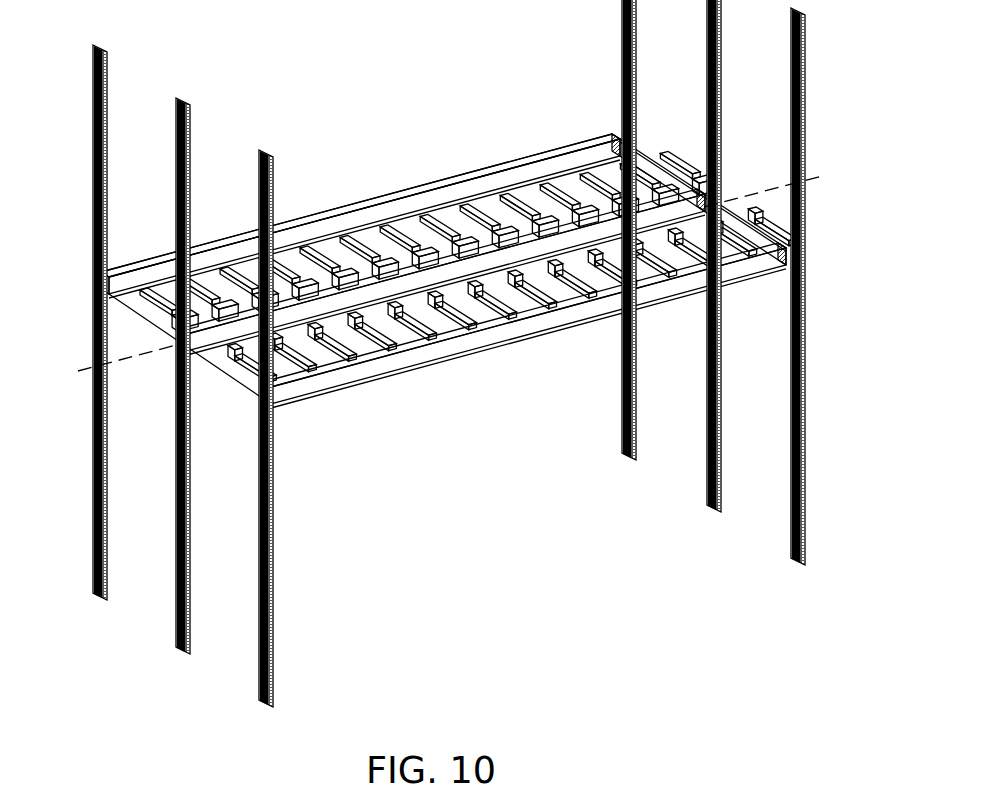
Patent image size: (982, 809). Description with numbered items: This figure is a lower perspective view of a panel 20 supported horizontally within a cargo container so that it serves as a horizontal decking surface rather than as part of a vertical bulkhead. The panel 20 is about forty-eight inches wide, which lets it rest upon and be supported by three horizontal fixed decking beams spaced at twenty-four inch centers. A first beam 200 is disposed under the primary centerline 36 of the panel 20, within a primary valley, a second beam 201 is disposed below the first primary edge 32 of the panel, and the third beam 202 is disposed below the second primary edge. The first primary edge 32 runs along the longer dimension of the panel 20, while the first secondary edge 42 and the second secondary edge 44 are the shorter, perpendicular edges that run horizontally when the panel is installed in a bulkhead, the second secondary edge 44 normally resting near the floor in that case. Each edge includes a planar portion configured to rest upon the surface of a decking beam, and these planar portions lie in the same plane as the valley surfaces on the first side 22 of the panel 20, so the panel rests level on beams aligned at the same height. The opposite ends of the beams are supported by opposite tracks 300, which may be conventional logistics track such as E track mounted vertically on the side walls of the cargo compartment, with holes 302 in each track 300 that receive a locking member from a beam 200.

The panel 20 is at (447, 252).
The first side 22 is at (302, 262).
The first primary edge 32 is at (382, 196).
The primary centerline 36 is at (800, 181).
The first secondary edge 42 is at (667, 163).
The second secondary edge 44 is at (232, 344).
The first beam 200 is at (445, 272).
The second beam 201 is at (360, 214).
The third beam 202 is at (541, 316).
The track 300 is at (623, 372).
The hole 302 is at (634, 356).